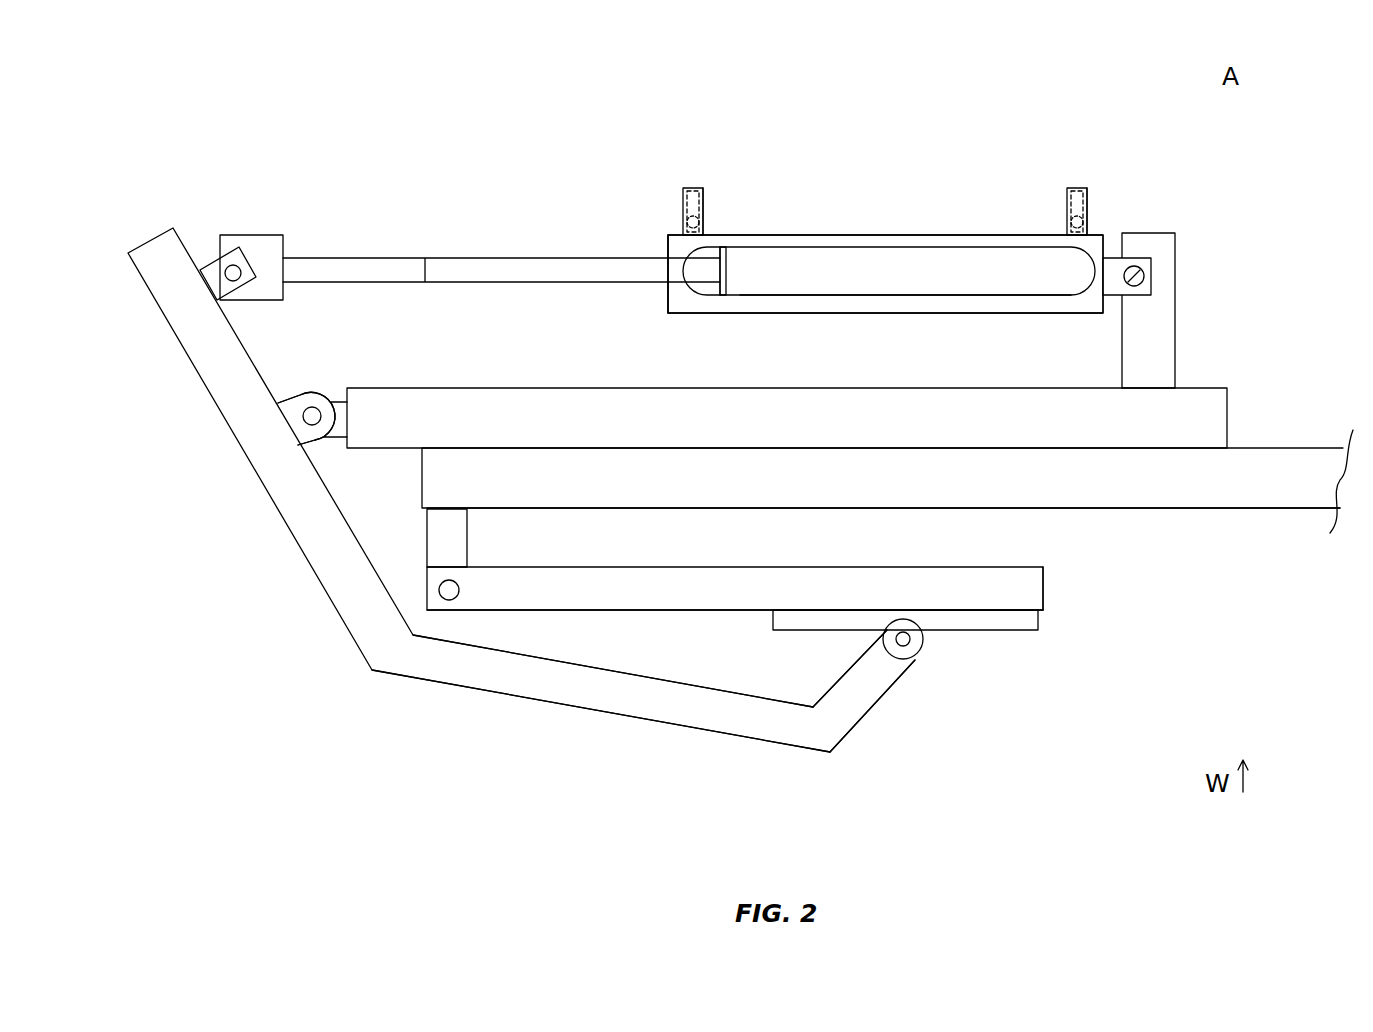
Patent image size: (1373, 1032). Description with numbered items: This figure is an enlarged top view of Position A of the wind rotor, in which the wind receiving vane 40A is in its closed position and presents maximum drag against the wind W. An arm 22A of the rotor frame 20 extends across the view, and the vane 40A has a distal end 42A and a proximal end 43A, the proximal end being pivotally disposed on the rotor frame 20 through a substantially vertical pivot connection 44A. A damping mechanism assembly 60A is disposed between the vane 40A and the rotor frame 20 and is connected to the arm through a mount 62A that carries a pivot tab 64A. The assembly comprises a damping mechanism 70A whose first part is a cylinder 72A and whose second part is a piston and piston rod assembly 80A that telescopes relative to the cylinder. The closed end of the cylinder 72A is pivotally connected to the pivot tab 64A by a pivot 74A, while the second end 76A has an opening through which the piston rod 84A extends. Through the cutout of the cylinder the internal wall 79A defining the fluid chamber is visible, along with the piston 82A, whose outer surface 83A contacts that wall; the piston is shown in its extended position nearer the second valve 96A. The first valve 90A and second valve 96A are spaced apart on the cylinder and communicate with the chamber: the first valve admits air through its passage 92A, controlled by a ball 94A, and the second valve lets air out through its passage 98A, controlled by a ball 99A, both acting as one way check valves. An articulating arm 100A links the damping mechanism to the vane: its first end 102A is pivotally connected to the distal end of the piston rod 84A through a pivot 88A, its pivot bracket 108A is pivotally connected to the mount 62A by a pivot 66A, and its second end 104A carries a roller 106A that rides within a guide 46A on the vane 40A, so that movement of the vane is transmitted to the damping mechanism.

The rotor frame 20 is at (1310, 448).
The arm 22A is at (1248, 508).
The wind receiving vane 40A is at (1040, 605).
The distal end 42A is at (980, 600).
The proximal end 43A is at (540, 595).
The pivot connection 44A is at (449, 595).
The guide 46A is at (980, 630).
The damping mechanism assembly 60A is at (952, 116).
The mount 62A is at (1208, 405).
The pivot tab 64A is at (1167, 362).
The pivot 66A is at (312, 410).
The damping mechanism 70A is at (878, 235).
The cylinder 72A is at (910, 245).
The pivot 74A is at (1143, 262).
The second end 76A is at (668, 258).
The internal wall 79A is at (920, 297).
The piston and piston rod assembly 80A is at (303, 265).
The piston 82A is at (723, 277).
The outer surface 83A is at (720, 295).
The piston rod 84A is at (465, 258).
The pivot 88A is at (228, 265).
The first valve 90A is at (1073, 188).
The passage 92A is at (1090, 205).
The ball 94A is at (1090, 222).
The second valve 96A is at (706, 192).
The passage 98A is at (693, 188).
The ball 99A is at (708, 212).
The articulating arm 100A is at (492, 693).
The first end 102A is at (180, 285).
The second end 104A is at (868, 712).
The roller 106A is at (888, 655).
The pivot bracket 108A is at (303, 437).